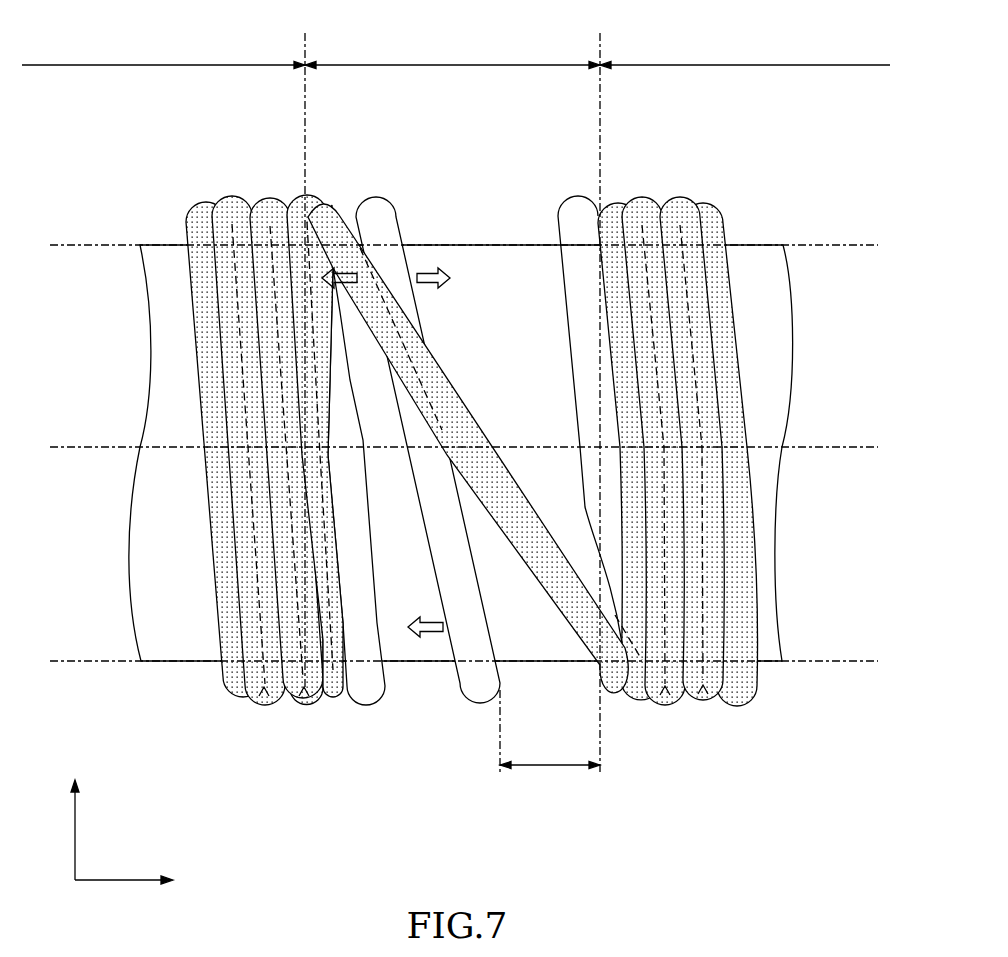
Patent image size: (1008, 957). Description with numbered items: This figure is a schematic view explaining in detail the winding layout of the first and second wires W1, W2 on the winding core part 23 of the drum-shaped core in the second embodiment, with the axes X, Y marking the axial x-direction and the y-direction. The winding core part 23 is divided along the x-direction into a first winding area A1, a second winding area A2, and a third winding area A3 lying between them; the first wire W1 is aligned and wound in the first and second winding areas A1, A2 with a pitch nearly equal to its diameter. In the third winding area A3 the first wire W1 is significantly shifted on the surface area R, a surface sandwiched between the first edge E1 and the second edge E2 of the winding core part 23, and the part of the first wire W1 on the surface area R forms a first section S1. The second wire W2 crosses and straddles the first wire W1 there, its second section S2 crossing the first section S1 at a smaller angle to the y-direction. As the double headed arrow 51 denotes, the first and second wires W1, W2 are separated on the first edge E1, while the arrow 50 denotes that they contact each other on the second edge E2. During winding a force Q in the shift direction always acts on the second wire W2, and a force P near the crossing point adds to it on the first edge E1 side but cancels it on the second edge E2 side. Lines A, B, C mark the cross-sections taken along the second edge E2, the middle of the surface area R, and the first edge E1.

The winding core part 23 is at (767, 326).
The arrow 50 is at (447, 429).
The double headed arrow 51 is at (550, 746).
The first wire W1 is at (207, 202).
The second wire W2 is at (228, 197).
The first section S1 is at (468, 397).
The second section S2 is at (428, 456).
The first edge E1 is at (417, 667).
The second edge E2 is at (428, 456).
The surface area R is at (538, 277).
The first winding area A1 is at (745, 403).
The second winding area A2 is at (163, 361).
The third winding area A3 is at (452, 50).
The force P is at (443, 280).
The force Q is at (372, 453).
The line A- A is at (463, 246).
The line B- B is at (463, 448).
The line C- C is at (463, 662).
The x-direction X is at (136, 881).
The y-direction Y is at (75, 815).